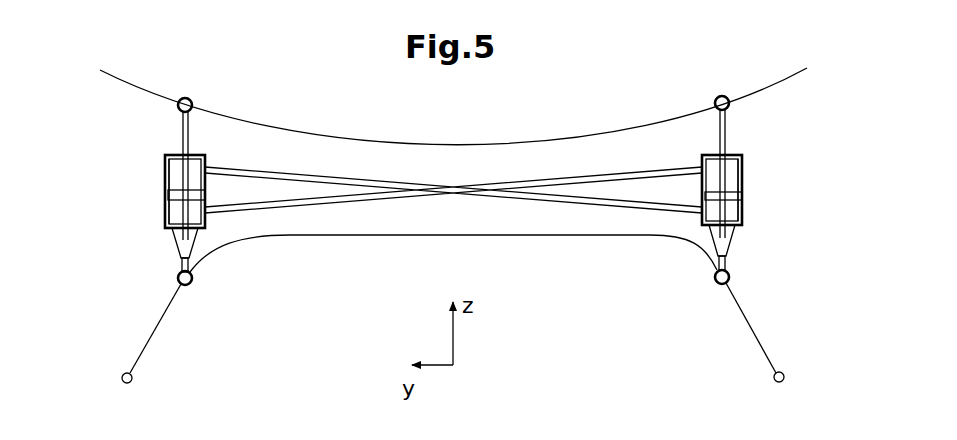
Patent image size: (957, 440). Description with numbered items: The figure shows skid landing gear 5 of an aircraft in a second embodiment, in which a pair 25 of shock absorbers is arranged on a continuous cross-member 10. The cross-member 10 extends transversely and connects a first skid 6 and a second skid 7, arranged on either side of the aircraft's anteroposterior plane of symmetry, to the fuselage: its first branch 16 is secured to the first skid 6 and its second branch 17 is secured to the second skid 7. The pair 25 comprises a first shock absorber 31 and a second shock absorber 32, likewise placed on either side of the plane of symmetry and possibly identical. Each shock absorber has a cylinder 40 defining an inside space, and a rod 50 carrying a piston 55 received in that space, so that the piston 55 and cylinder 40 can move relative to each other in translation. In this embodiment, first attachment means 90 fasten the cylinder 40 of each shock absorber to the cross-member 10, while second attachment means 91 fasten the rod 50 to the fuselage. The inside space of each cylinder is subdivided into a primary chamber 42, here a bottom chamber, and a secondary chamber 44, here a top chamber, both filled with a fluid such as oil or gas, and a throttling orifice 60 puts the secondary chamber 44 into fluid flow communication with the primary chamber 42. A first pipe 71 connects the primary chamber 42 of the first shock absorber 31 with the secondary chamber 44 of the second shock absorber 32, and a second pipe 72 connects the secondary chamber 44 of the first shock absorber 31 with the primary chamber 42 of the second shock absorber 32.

The skid landing gear 5 is at (737, 370).
The first longitudinal bearing skid 6 is at (122, 380).
The second longitudinal bearing skid 7 is at (785, 380).
The cross-member 10 is at (176, 330).
The first branch 16 is at (152, 332).
The second branch 17 is at (756, 332).
The pair of shock absorbers 25 is at (810, 160).
The first shock absorber 31 is at (168, 162).
The second shock absorber 32 is at (740, 157).
The cylinder 40 is at (172, 192).
The primary chamber 42 is at (176, 218).
The secondary chamber 44 is at (250, 172).
The rod 50 is at (190, 135).
The piston 55 is at (170, 178).
The throttling orifice 60 is at (168, 205).
The first pipe 71 is at (533, 215).
The second pipe 72 is at (392, 215).
The first attachment means 90 is at (193, 283).
The second attachment means 91 is at (188, 98).